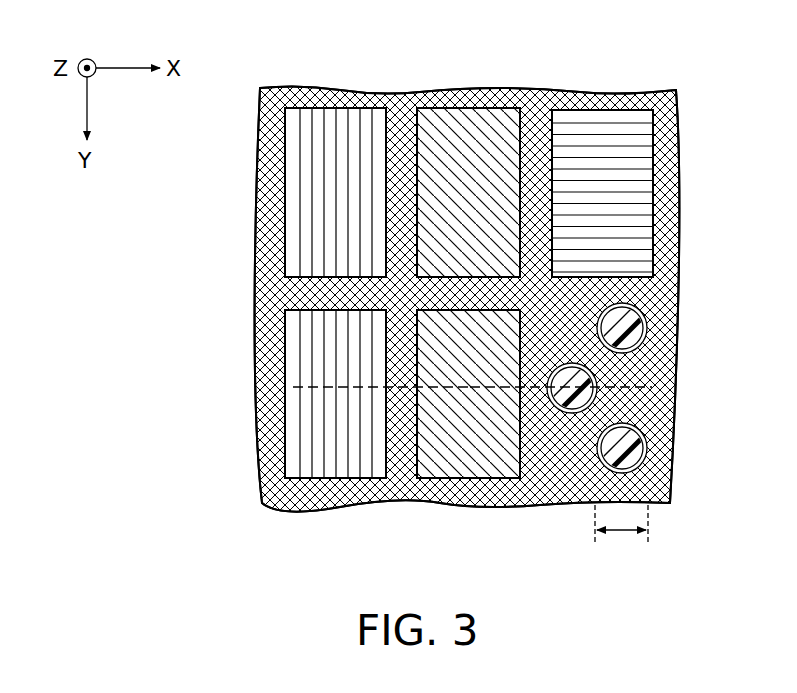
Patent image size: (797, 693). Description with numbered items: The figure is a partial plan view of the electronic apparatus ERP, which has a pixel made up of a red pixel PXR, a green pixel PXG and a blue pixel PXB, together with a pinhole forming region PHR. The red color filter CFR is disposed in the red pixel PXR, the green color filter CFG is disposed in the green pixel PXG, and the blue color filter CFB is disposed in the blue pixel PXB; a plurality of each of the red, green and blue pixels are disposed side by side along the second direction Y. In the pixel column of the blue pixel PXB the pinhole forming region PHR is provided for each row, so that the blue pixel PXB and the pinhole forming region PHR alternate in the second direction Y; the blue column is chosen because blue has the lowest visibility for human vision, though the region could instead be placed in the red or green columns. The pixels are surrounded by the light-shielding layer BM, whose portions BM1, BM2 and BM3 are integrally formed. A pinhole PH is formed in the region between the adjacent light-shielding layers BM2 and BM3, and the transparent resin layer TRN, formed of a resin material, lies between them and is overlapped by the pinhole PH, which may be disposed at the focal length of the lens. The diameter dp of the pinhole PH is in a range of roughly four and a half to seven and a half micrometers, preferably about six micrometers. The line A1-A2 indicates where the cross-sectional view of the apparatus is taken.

The red pixel PXR is at (307, 100).
The red color filter CFR is at (361, 125).
The green pixel PXG is at (436, 100).
The green color filter CFG is at (488, 120).
The blue pixel PXB is at (560, 100).
The blue color filter CFB is at (612, 115).
The electronic apparatus ERP is at (684, 70).
The pinhole PH is at (641, 310).
The transparent resin layer TRN is at (636, 340).
The light-shielding layer BM is at (656, 367).
The line A1-A2 end point A1 is at (381, 404).
The line A1-A2 end point A2 is at (565, 404).
The pinhole forming region PHR is at (642, 466).
The light-shielding layer BM1 is at (403, 402).
The light-shielding layer BM2 is at (543, 405).
The light-shielding layer BM3 is at (603, 405).
The diameter of the pinhole dp is at (621, 535).